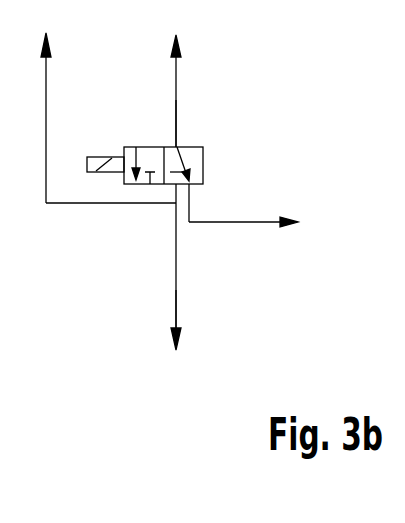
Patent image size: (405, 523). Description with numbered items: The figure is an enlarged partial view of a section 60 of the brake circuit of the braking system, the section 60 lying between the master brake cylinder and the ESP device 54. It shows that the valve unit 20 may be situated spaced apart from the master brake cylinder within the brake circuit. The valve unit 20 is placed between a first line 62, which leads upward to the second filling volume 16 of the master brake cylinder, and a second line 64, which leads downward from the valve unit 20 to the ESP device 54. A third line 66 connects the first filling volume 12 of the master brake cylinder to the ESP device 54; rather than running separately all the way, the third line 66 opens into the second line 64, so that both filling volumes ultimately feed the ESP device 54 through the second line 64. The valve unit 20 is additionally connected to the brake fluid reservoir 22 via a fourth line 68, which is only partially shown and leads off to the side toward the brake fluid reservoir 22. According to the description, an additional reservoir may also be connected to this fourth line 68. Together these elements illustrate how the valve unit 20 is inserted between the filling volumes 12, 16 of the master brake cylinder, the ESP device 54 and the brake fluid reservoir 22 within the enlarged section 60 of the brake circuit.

The first filling volume 12 is at (46, 75).
The second filling volume 16 is at (176, 73).
The valve unit 20 is at (203, 160).
The brake fluid reservoir 22 is at (258, 222).
The ESP device 54 is at (176, 308).
The section 60 is at (281, 135).
The first line 62 is at (176, 120).
The second line 64 is at (177, 258).
The third line 66 is at (83, 203).
The fourth line 68 is at (190, 200).